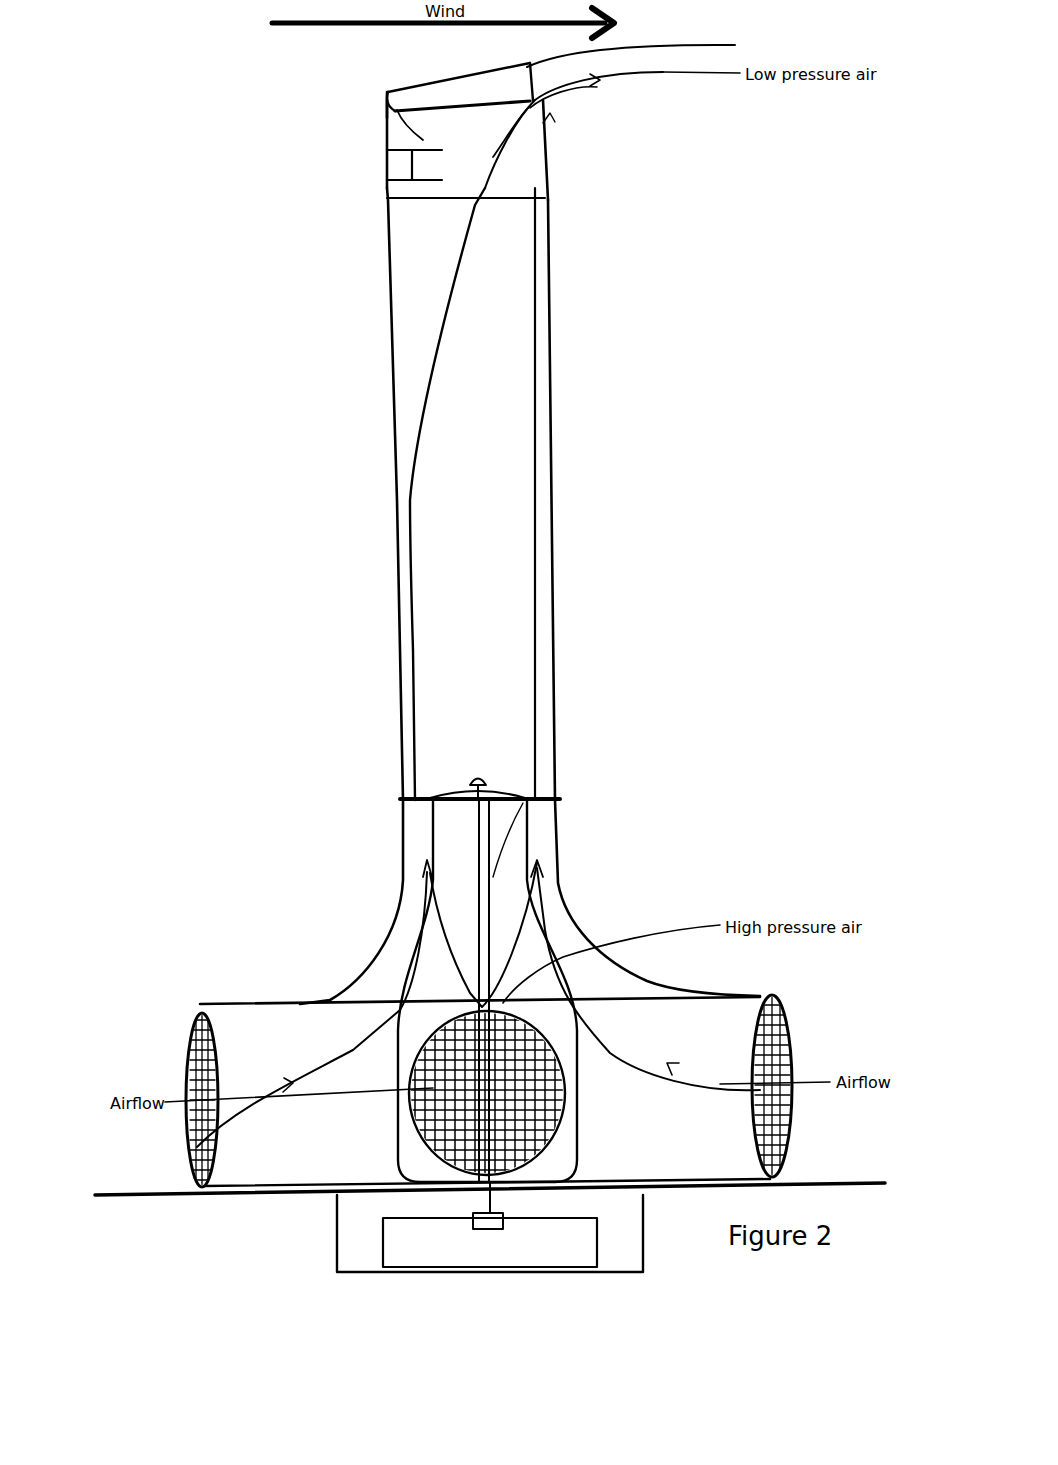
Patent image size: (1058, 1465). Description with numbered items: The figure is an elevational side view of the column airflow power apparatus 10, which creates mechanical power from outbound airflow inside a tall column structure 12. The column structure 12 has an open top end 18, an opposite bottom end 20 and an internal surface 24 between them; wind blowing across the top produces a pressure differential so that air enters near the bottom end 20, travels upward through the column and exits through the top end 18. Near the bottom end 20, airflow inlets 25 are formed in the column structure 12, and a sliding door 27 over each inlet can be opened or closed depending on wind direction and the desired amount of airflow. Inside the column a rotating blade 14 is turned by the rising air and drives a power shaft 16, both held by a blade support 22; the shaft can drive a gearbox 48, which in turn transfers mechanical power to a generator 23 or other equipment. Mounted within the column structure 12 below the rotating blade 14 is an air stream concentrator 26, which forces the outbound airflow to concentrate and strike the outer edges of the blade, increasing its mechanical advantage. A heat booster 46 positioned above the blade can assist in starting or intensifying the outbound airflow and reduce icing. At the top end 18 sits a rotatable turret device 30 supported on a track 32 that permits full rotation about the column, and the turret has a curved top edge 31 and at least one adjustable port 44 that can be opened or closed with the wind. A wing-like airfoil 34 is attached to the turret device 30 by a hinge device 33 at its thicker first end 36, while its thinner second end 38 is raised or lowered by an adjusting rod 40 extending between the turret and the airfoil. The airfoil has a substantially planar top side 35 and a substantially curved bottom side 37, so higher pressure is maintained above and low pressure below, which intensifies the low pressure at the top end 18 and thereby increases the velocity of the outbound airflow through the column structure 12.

The column airflow power apparatus 10 is at (666, 446).
The column structure 12 is at (556, 536).
The rotating blade 14 is at (530, 797).
The power shaft 16 is at (490, 1200).
The top end 18 is at (552, 213).
The bottom end 20 is at (557, 863).
The blade support 22 is at (497, 977).
The generator 23 is at (407, 1256).
The internal surface 24 is at (527, 413).
The airflow inlet 25 is at (433, 1092).
The air stream concentrator 26 is at (540, 794).
The sliding door 27 is at (417, 1032).
The turret device 30 is at (387, 121).
The top edge 31 is at (453, 108).
The track 32 is at (387, 183).
The hinge device 33 is at (386, 96).
The airfoil 34 is at (388, 90).
The top side 35 is at (442, 78).
The first end 36 is at (407, 119).
The bottom side 37 is at (477, 97).
The second end 38 is at (540, 75).
The adjusting rod 40 is at (735, 45).
The adjustable port 44 is at (387, 117).
The heat booster 46 is at (480, 778).
The gearbox 48 is at (473, 1220).